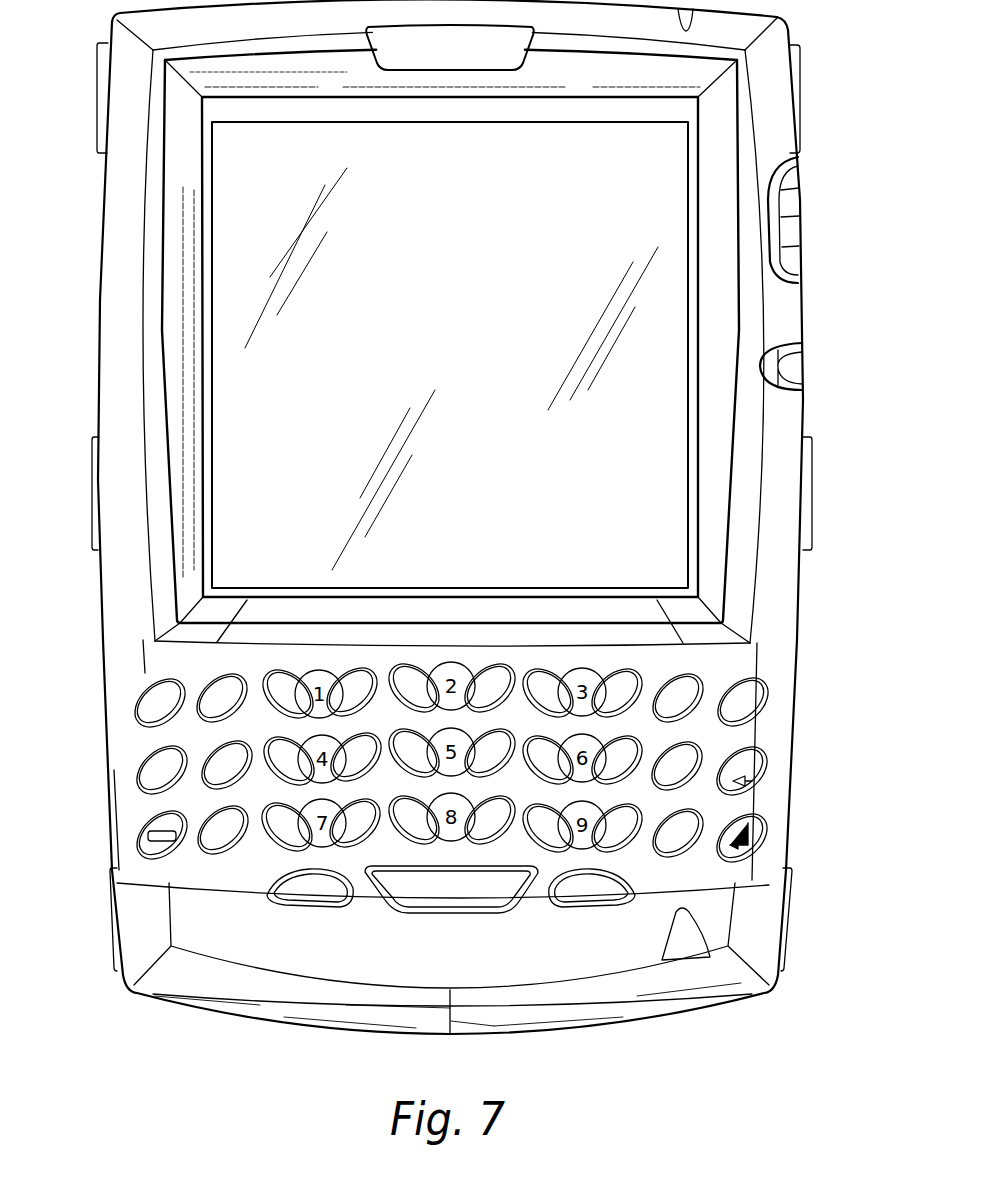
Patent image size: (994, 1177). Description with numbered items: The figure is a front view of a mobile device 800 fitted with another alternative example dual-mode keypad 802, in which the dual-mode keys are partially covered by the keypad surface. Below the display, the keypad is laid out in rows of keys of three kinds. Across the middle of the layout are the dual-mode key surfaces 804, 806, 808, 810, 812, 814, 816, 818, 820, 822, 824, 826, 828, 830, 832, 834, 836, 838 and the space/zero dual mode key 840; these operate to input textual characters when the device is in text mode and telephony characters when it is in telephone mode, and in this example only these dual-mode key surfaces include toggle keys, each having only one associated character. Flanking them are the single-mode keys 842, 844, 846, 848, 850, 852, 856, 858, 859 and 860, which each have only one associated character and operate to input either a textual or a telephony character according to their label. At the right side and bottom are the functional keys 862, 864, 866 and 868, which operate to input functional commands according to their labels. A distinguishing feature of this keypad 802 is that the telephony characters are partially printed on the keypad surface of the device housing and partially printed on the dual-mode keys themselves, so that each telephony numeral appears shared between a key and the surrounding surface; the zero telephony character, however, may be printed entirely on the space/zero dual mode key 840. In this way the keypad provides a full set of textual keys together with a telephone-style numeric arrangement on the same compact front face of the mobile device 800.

The mobile device 800 is at (100, 248).
The dual-mode keypad 802 is at (200, 687).
The dual-mode key surface 804 is at (275, 672).
The dual-mode key surface 806 is at (363, 668).
The dual-mode key surface 808 is at (413, 663).
The dual-mode key surface 810 is at (490, 663).
The dual-mode key surface 812 is at (560, 668).
The dual-mode key surface 814 is at (633, 667).
The dual-mode key surface 816 is at (263, 755).
The dual-mode key surface 818 is at (342, 738).
The dual-mode key surface 820 is at (408, 736).
The dual-mode key surface 822 is at (488, 733).
The dual-mode key surface 824 is at (563, 734).
The dual-mode key surface 826 is at (638, 756).
The dual-mode key surface 828 is at (262, 816).
The dual-mode key surface 830 is at (343, 806).
The dual-mode key surface 832 is at (409, 803).
The dual-mode key surface 834 is at (488, 800).
The dual-mode key surface 836 is at (563, 801).
The dual-mode key surface 838 is at (638, 823).
The space/0 dual mode key 840 is at (453, 914).
The single-mode key 842 is at (138, 700).
The single-mode key 844 is at (172, 655).
The single-mode key 846 is at (700, 673).
The single-mode key 848 is at (765, 705).
The single-mode key 850 is at (137, 763).
The single-mode key 852 is at (202, 750).
The single-mode key 856 is at (217, 855).
The single-mode key 858 is at (318, 911).
The single-mode key 859 is at (757, 740).
The single-mode key 860 is at (613, 907).
The functional key 862 is at (767, 763).
The functional key 864 is at (137, 827).
The functional key 866 is at (679, 857).
The functional key 868 is at (765, 814).